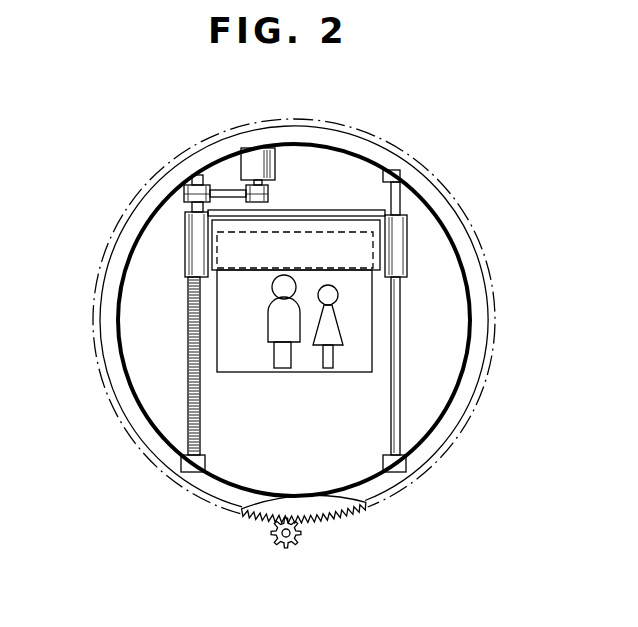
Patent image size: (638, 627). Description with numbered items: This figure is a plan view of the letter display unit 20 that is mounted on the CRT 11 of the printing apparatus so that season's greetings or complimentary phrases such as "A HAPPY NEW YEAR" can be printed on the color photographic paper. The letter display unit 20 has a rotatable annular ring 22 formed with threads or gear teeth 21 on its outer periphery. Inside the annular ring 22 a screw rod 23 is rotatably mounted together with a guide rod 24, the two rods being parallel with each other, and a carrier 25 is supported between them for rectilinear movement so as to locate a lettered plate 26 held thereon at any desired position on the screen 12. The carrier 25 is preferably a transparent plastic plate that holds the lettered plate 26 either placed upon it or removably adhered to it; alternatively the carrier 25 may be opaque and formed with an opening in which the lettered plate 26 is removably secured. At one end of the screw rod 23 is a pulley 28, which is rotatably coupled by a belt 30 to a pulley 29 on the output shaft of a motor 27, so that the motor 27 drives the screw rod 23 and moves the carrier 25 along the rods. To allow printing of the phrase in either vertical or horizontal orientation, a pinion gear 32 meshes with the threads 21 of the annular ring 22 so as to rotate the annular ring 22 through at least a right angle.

The CRT 11 is at (330, 375).
The screen 12 is at (250, 362).
The letter display unit 20 is at (132, 443).
The threads or gear teeth 21 is at (315, 522).
The annular ring 22 is at (458, 405).
The screw rod 23 is at (190, 327).
The guide rod 24 is at (400, 328).
The carrier 25 is at (383, 242).
The lettered plate 26 is at (350, 267).
The motor 27 is at (261, 148).
The pulley 28 is at (184, 182).
The pulley 29 is at (268, 196).
The belt 30 is at (228, 190).
The pinion gear 32 is at (278, 543).